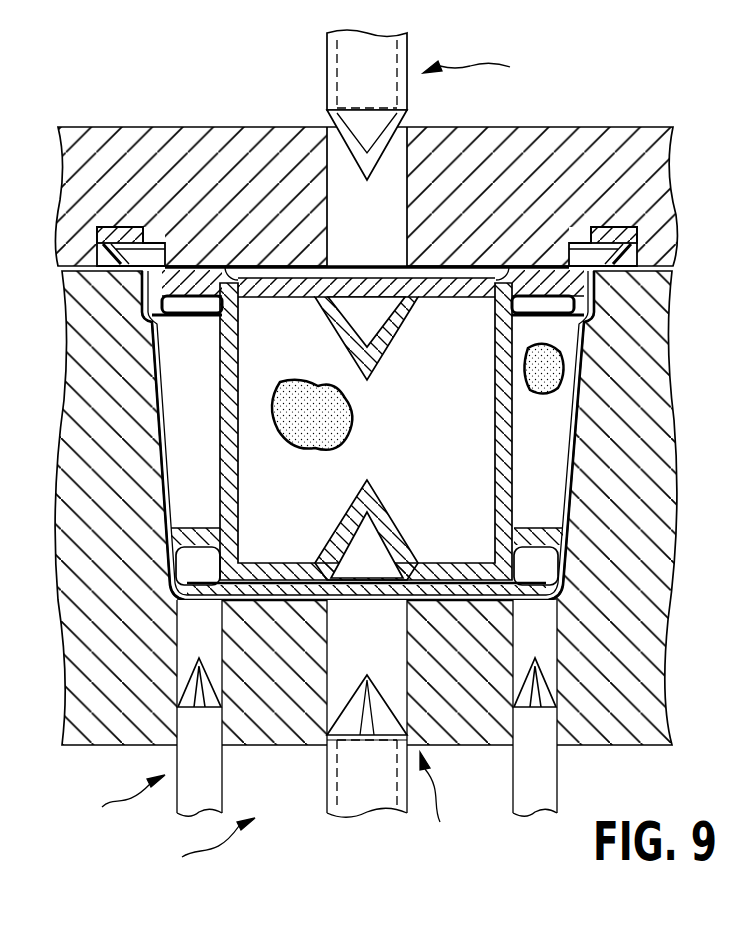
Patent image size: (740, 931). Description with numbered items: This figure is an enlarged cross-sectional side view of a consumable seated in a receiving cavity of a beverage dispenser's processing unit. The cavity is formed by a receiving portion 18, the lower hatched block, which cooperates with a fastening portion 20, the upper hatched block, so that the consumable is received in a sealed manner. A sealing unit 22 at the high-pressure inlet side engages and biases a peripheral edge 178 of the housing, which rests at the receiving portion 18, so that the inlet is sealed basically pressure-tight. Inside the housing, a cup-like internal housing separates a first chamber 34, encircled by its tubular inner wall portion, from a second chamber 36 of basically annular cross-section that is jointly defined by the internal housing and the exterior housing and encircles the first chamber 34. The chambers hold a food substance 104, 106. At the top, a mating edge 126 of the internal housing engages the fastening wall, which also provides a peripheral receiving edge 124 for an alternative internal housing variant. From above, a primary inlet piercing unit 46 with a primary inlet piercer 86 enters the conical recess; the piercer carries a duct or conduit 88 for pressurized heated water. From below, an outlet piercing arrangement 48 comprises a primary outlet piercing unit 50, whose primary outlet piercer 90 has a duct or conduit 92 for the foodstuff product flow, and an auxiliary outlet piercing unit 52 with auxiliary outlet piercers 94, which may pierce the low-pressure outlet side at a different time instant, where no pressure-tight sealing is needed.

The receiving portion 18 is at (643, 665).
The fastening portion 20 is at (607, 153).
The sealing unit 22 is at (118, 232).
The first chamber 34 is at (467, 485).
The second chamber 36 is at (537, 433).
The primary inlet piercing unit 46 is at (483, 65).
The outlet piercing arrangement 48 is at (201, 848).
The primary outlet piercing unit 50 is at (436, 803).
The auxiliary outlet piercing unit 52 is at (115, 802).
The primary inlet piercer 86 is at (333, 91).
The duct or conduit 88 is at (333, 59).
The primary outlet piercer 90 is at (384, 793).
The duct or conduit 92 is at (337, 773).
The auxiliary outlet piercer 94 is at (215, 793).
The food substance 104 is at (338, 412).
The food substance 106 is at (557, 365).
The peripheral receiving edge 124 is at (573, 305).
The mating edge 126 is at (225, 293).
The peripheral edge 178 is at (597, 267).